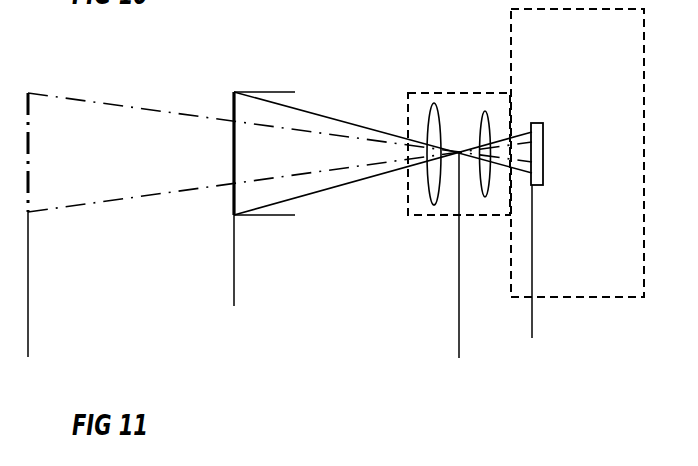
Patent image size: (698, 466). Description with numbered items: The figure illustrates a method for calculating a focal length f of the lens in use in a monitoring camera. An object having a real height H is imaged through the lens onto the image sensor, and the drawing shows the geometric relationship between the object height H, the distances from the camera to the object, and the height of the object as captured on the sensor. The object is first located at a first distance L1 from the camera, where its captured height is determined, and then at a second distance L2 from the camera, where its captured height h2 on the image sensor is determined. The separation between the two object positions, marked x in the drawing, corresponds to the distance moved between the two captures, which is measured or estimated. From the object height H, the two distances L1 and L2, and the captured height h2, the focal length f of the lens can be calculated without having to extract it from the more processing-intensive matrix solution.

The height of the object H is at (295, 92).
The captured height of the object at the second distance h2 is at (572, 92).
The distance from object plane to aperture x is at (234, 297).
The first distance from the camera to the object L1 is at (459, 348).
The second distance from the camera to the object L2 is at (459, 297).
The focal length f is at (532, 328).